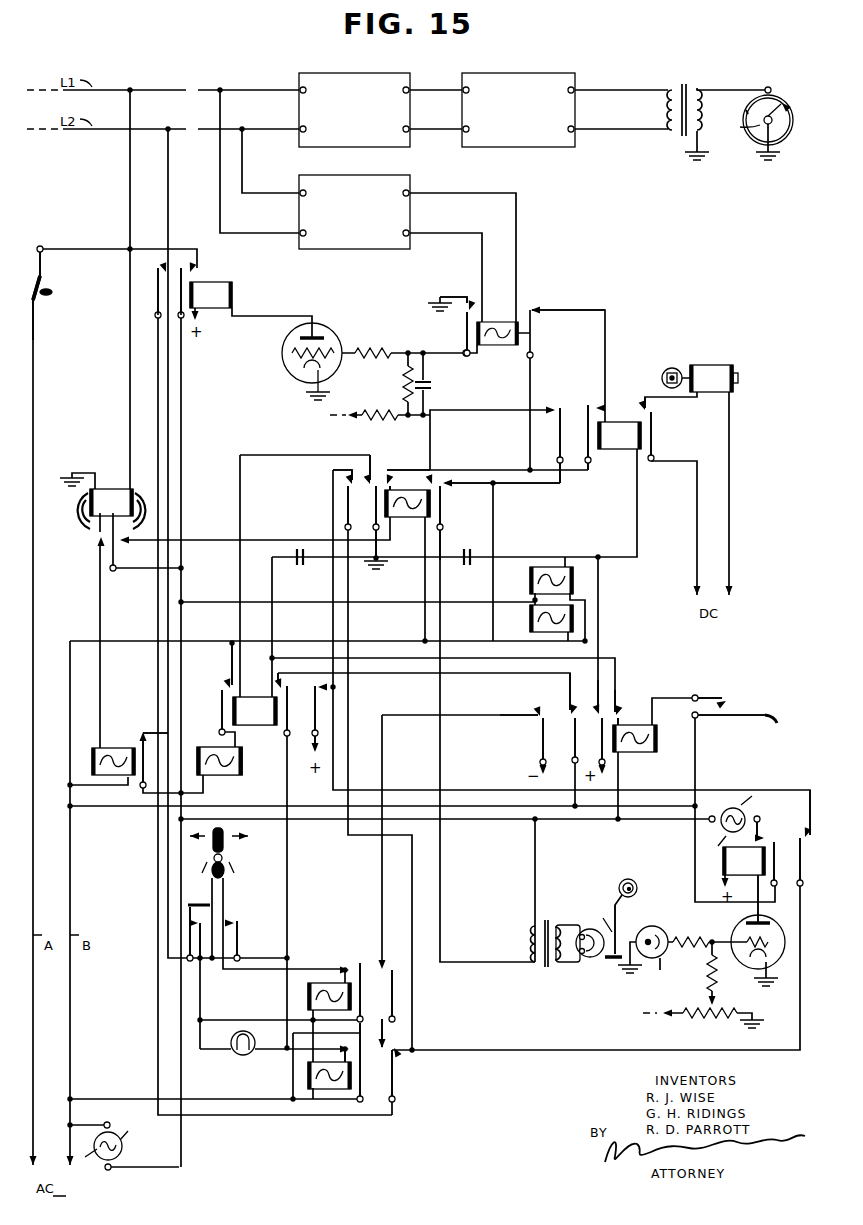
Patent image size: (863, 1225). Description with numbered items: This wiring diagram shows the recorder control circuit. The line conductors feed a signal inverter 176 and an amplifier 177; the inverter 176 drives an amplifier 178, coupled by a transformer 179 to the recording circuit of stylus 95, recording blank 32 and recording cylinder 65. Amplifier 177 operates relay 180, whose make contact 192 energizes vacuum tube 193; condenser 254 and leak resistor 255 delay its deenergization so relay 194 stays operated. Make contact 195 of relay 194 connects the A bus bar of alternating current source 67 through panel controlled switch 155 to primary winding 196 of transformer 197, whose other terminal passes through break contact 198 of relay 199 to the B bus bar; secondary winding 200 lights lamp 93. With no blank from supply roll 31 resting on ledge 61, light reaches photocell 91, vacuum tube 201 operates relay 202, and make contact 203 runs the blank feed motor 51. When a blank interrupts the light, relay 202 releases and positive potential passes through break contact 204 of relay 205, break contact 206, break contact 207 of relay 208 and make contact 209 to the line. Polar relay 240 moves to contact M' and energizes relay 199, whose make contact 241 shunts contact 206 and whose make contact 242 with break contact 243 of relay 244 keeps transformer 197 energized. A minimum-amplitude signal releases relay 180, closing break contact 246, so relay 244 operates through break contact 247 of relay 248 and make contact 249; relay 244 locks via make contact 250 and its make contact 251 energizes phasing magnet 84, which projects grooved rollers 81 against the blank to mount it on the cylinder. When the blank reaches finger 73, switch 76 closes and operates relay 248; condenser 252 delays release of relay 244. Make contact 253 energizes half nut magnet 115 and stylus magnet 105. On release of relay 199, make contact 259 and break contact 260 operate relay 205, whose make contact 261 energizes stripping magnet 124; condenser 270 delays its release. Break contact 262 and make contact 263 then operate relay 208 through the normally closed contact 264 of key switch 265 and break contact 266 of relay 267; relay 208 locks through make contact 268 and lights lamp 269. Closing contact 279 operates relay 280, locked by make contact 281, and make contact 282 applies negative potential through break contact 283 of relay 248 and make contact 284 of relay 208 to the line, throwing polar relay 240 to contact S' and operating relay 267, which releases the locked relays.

The panel controlled switch 155 is at (38, 266).
The make contact of relay 194 209 is at (164, 268).
The make contact of relay 194 195 is at (186, 266).
The relay 194 is at (221, 270).
The vacuum tube 193 is at (282, 362).
The signal inverter 176 is at (356, 73).
The amplifier 178 is at (508, 73).
The amplifier 177 is at (345, 249).
The transformer 179 is at (681, 82).
The stylus 95 is at (776, 90).
The recording blank 32 is at (746, 112).
The recording cylinder 65 is at (738, 134).
The make contact of relay 180 192 is at (473, 296).
The relay 180 is at (502, 346).
The break contact of relay 180 246 is at (534, 309).
The leak resistor 255 is at (400, 383).
The condenser 254 is at (430, 385).
The break contact of relay 244 243 is at (558, 406).
The make contact of relay 244 250 is at (589, 405).
The grooved rollers 81 is at (669, 368).
The phasing magnet 84 is at (710, 366).
The make contact of relay 244 251 is at (650, 407).
The relay 244 is at (615, 449).
The three-position polar relay 240 is at (108, 488).
The break contact of relay 199 260 is at (372, 480).
The make contact of relay 199 241 is at (352, 478).
The make contact of relay 199 249 is at (388, 481).
The make contact of relay 199 242 is at (433, 481).
The break contact of relay 199 198 is at (445, 487).
The relay 199 is at (411, 518).
The condenser 252 is at (466, 550).
The condenser 270 is at (300, 568).
The half nut magnet 115 is at (532, 572).
The stylus magnet 105 is at (550, 633).
The make contact of relay 205 261 is at (229, 684).
The make contact of relay 205 263 is at (283, 670).
The break contact of relay 205 204 is at (322, 690).
The make contact of relay 248 253 is at (570, 706).
The break contact of relay 248 262 is at (556, 706).
The break contact of relay 248 283 is at (537, 720).
The break contact of relay 248 247 is at (600, 710).
The make contact of relay 248 259 is at (614, 714).
The relay 248 is at (640, 753).
The switch 76 is at (729, 700).
The finger 73 is at (767, 713).
The break contact of relay 267 266 is at (143, 728).
The relay 267 is at (116, 752).
The relay 205 is at (256, 726).
The blank stripping magnet 124 is at (222, 777).
The blank feed motor 51 is at (742, 812).
The break contact of relay 202 206 is at (807, 830).
The make contact of relay 202 203 is at (774, 840).
The relay 202 is at (722, 851).
The vacuum tube 201 is at (740, 926).
The key switch 265 is at (230, 864).
The normally closed contact of key switch 264 is at (193, 921).
The switch contact 279 is at (235, 921).
The supply roll 31 is at (630, 878).
The light source 93 is at (586, 928).
The primary winding 196 is at (530, 942).
The transformer 197 is at (534, 967).
The secondary winding 200 is at (576, 966).
The ledge 61 is at (611, 949).
The photocell 91 is at (660, 970).
The make contact of relay 280 281 is at (358, 962).
The make contact of relay 280 282 is at (392, 965).
The relay 280 is at (322, 986).
The make contact of relay 208 268 is at (356, 1046).
The light 269 is at (243, 1056).
The make contact of relay 208 284 is at (384, 1055).
The break contact of relay 208 207 is at (398, 1053).
The relay 208 is at (326, 1089).
The generator 67 is at (123, 1148).